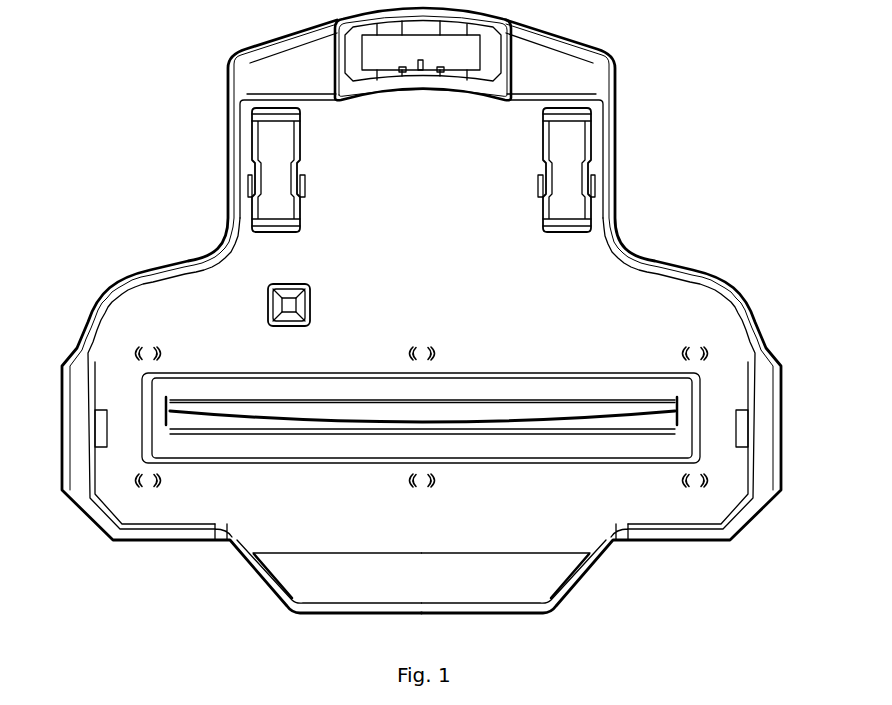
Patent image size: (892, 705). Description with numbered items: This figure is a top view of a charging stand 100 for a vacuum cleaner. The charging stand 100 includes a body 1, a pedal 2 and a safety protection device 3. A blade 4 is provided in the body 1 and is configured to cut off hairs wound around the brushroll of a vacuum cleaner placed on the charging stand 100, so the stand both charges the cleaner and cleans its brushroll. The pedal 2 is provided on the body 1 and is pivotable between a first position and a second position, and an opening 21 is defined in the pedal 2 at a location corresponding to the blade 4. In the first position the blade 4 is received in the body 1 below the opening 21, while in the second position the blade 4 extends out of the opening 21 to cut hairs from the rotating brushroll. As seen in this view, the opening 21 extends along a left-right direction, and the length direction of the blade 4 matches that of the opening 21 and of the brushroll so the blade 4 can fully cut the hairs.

The charging stand 100 is at (155, 110).
The body 1 is at (668, 255).
The pedal 2 is at (193, 497).
The opening 21 is at (652, 425).
The safety protection device 3 is at (100, 425).
The blade 4 is at (283, 413).